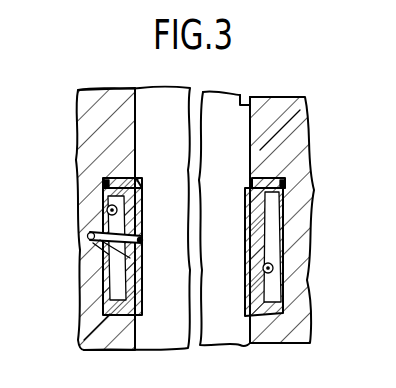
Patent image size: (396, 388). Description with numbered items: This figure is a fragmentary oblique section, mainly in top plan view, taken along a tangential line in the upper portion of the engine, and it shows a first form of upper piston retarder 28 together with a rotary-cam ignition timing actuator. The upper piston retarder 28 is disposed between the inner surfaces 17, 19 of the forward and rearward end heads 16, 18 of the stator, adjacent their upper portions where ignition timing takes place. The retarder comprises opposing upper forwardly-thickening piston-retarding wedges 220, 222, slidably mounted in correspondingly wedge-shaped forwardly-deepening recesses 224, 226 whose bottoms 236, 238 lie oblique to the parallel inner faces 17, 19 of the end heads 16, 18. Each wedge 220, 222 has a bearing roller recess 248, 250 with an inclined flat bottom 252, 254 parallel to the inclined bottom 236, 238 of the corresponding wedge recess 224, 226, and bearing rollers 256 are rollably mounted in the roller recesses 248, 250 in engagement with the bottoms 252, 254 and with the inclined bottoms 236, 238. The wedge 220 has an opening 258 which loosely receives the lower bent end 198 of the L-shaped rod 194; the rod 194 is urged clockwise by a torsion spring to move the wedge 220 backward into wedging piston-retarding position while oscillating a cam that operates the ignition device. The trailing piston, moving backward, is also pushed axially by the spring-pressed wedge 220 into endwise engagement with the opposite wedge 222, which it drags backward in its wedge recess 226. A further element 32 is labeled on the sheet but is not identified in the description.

The forward end head 16 is at (302, 100).
The inner surface 17 is at (244, 345).
The rearward end head 18 is at (78, 97).
The inner surface 19 is at (136, 350).
The upper piston retarder 28 is at (128, 178).
The panel edge notch 32 is at (244, 96).
The L-shaped rod 194 is at (88, 238).
The lower bent end 198 is at (92, 270).
The piston-retarding wedge 220 is at (92, 322).
The piston-retarding wedge 222 is at (270, 300).
The wedge-shaped recess 224 is at (122, 176).
The wedge-shaped recess 226 is at (298, 158).
The recess bottom 236 is at (103, 183).
The recess bottom 238 is at (285, 186).
The bearing roller recess 248 is at (141, 186).
The bearing roller recess 250 is at (271, 242).
The inclined flat bottom 252 is at (142, 262).
The inclined flat bottom 254 is at (275, 267).
The bearing rollers 256 is at (106, 211).
The opening 258 is at (141, 222).